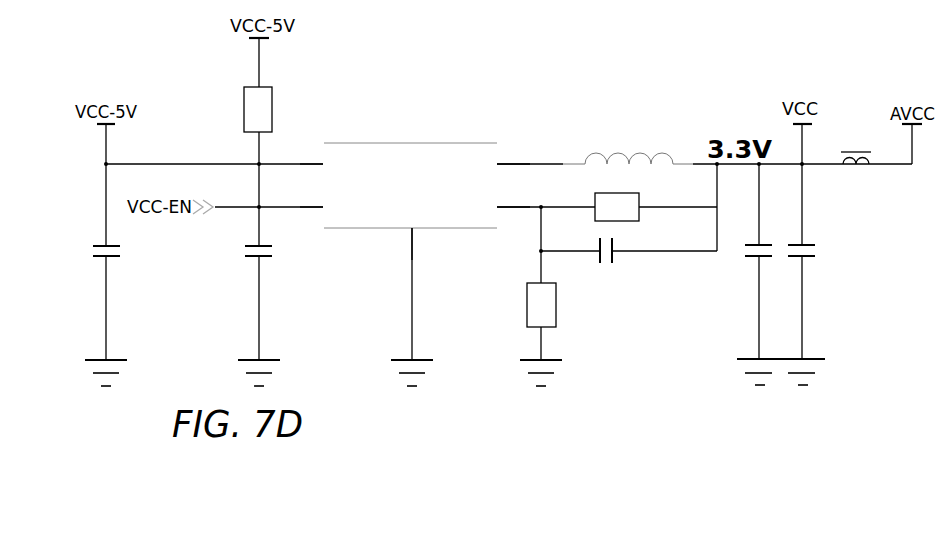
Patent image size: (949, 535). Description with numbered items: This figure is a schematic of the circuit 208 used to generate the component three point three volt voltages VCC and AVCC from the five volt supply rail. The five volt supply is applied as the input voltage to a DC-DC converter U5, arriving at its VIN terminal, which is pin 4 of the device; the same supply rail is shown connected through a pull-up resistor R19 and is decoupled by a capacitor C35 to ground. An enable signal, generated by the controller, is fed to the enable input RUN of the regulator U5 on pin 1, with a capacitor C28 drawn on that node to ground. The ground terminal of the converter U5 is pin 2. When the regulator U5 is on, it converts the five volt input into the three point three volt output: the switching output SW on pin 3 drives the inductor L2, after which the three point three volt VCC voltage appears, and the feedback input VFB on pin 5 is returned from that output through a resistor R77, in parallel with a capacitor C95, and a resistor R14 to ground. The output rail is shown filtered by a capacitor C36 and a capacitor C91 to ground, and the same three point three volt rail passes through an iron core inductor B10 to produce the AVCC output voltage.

The circuit 208 is at (443, 133).
The DC-DC converter U5 is at (410, 172).
The pull-up resistor 10K R19 is at (247, 101).
The input capacitor 4.7uF C35 is at (104, 294).
The capacitor 100nF C28 is at (258, 275).
The inductor L2 is at (628, 146).
The feedback resistor 100K R77 is at (656, 197).
The feed-forward capacitor 22PF C95 is at (629, 247).
The feedback resistor 22K R14 is at (534, 334).
The output capacitor 10UF C36 is at (754, 261).
The output capacitor 100nF C91 is at (799, 261).
The iron core inductor B10 is at (857, 161).
The RUN pin 1 is at (311, 202).
The GND pin 2 is at (406, 244).
The SW pin 3 is at (513, 159).
The VIN pin 4 is at (311, 157).
The VFB pin 5 is at (513, 201).